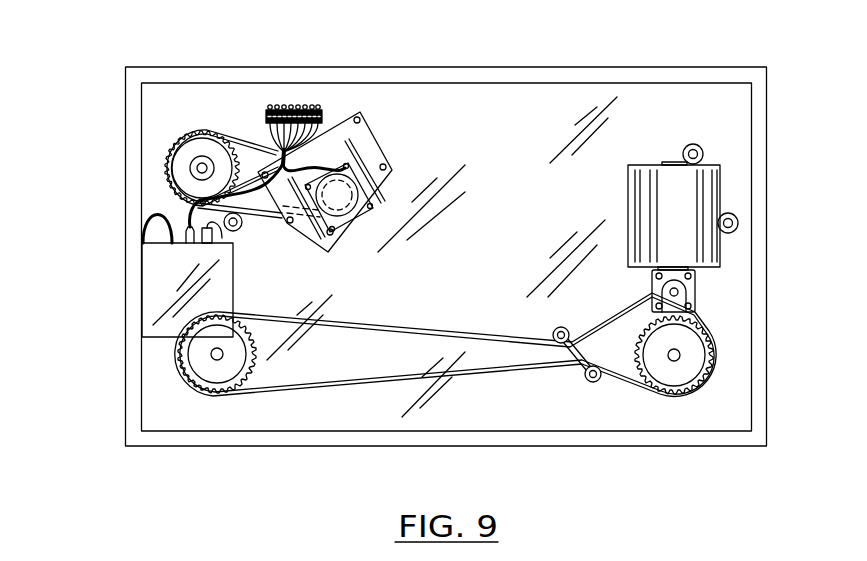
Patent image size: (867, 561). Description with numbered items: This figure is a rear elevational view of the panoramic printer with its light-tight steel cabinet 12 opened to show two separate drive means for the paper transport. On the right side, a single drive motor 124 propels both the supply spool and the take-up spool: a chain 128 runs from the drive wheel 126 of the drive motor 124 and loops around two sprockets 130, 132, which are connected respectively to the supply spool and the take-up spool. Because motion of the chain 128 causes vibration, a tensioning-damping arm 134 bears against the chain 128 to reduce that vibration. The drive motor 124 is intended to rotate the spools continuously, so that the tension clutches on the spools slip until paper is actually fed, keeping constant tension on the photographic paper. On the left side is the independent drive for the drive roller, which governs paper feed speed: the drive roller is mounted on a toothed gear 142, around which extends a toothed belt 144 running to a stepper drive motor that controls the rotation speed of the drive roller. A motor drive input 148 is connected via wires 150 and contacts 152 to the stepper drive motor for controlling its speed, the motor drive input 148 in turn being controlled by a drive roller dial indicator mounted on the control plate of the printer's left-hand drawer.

The cabinet 12 is at (762, 75).
The drive motor 124 is at (682, 198).
The drive wheel 126 is at (683, 295).
The chain 128 is at (325, 388).
The sprocket 130 is at (213, 377).
The sprocket 132 is at (685, 373).
The tensioning-damping arm 134 is at (571, 355).
The toothed gear 142 is at (181, 166).
The toothed belt 144 is at (241, 145).
The motor drive input 148 is at (163, 284).
The wires 150 is at (255, 125).
The contacts 152 is at (297, 110).